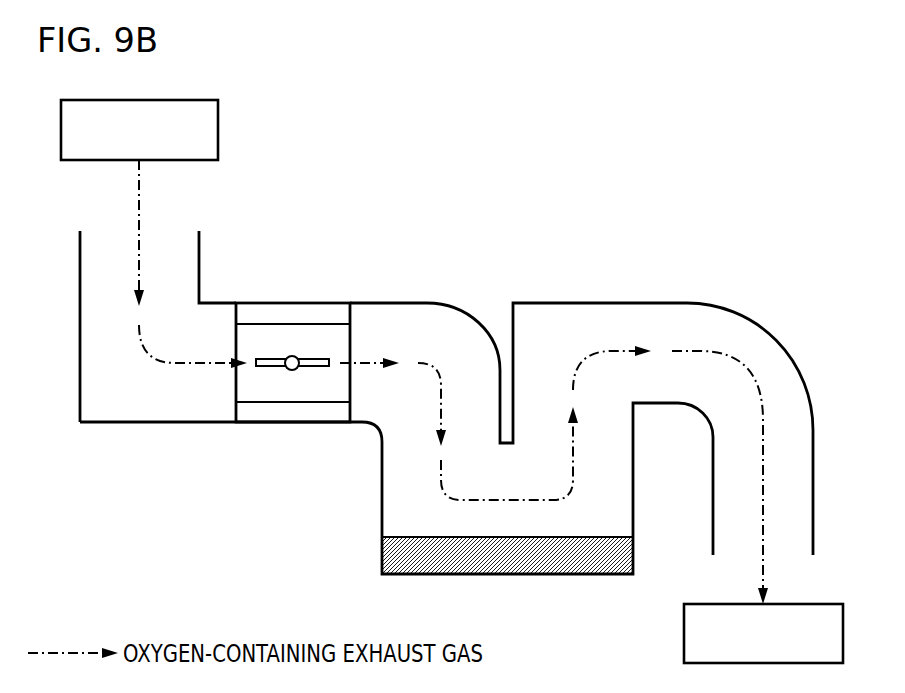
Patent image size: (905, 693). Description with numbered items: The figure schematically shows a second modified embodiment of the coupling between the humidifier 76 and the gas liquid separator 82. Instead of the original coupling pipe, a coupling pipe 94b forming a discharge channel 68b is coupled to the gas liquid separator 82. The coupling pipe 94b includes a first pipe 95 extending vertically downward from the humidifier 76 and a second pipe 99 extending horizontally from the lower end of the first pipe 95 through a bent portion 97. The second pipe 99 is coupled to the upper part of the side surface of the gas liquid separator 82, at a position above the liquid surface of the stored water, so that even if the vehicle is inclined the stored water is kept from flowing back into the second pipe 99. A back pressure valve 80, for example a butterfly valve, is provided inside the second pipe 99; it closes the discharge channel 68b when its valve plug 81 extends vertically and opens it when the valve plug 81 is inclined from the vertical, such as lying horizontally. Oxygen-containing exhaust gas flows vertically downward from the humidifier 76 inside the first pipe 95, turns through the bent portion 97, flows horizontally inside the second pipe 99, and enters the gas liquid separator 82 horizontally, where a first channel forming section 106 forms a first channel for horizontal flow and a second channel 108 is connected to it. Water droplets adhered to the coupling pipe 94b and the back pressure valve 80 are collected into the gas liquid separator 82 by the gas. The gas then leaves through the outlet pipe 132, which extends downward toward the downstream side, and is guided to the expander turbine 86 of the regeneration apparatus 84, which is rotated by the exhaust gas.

The humidifier 76 is at (218, 122).
The back pressure valve 80 is at (269, 313).
The valve plug 81 is at (294, 357).
The gas liquid separator 82 is at (372, 475).
The regeneration apparatus 84 is at (710, 633).
The expander turbine 86 is at (684, 619).
The coupling pipe 94b is at (196, 380).
The discharge channel 68b is at (196, 380).
The first pipe 95 is at (80, 392).
The bent portion 97 is at (78, 424).
The second pipe 99 is at (219, 423).
The first channel forming section 106 is at (380, 515).
The second channel 108 is at (582, 302).
The outlet pipe 132 is at (791, 362).